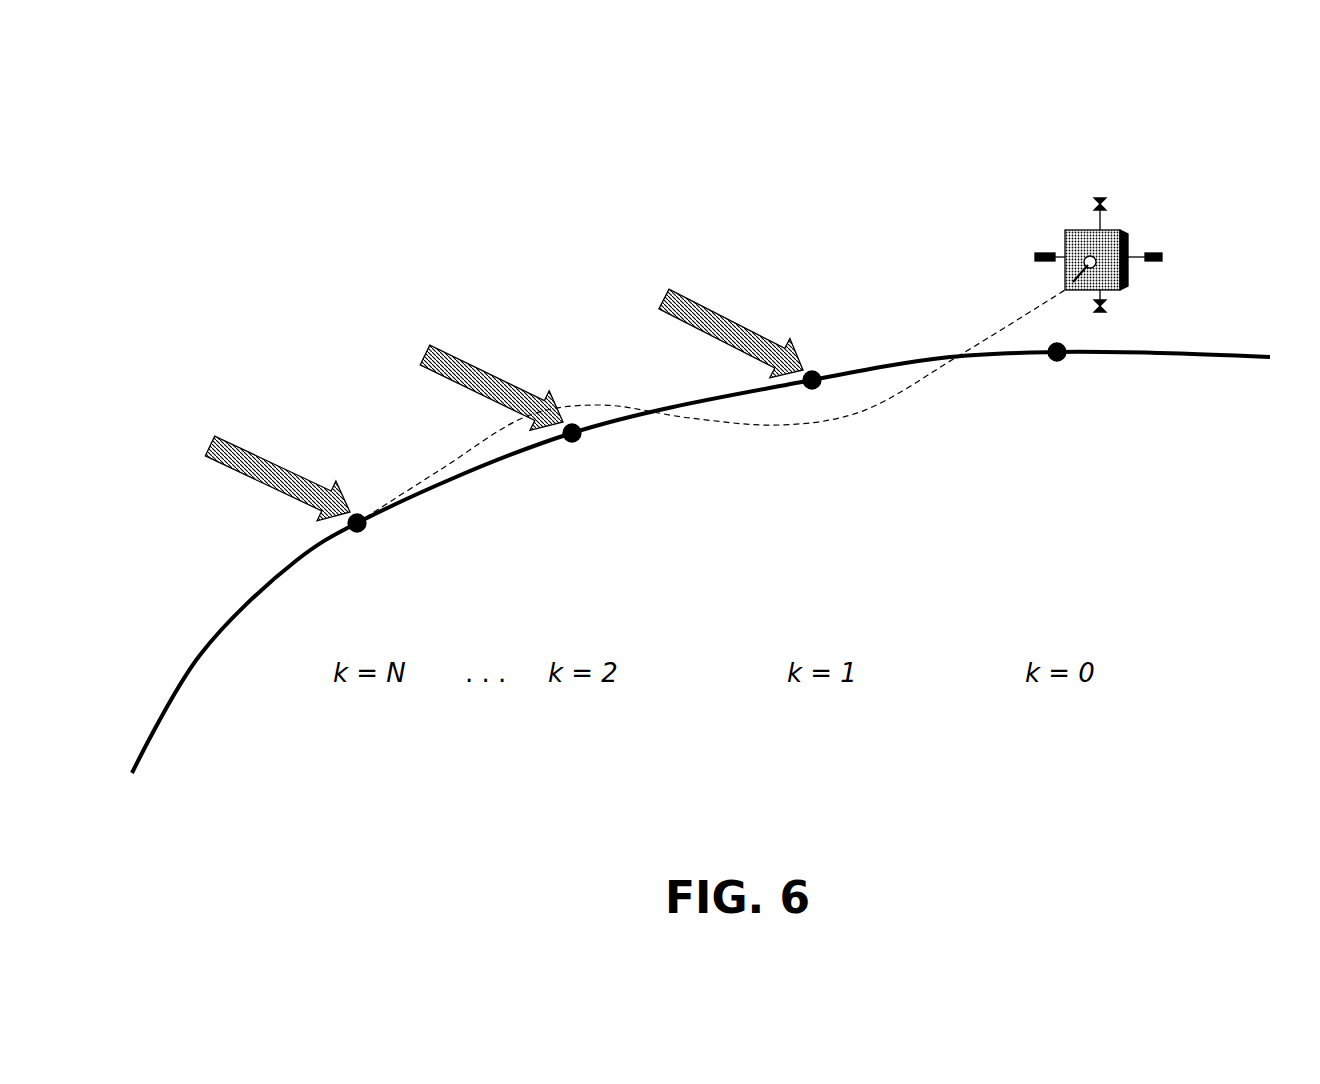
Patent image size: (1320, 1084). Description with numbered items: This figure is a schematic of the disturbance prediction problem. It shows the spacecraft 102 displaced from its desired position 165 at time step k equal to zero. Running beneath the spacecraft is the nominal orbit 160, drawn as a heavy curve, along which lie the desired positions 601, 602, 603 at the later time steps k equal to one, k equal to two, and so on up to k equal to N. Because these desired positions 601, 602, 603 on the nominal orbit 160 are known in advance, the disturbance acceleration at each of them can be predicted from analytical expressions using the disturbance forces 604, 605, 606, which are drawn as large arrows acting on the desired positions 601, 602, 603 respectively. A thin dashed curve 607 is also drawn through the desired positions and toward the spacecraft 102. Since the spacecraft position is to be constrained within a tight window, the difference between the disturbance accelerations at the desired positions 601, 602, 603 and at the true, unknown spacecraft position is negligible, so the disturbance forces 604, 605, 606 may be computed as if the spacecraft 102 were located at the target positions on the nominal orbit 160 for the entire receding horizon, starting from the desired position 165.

The spacecraft 102 is at (1072, 233).
The nominal orbit 160 is at (135, 770).
The desired position 165 is at (1063, 360).
The desired position 601 is at (815, 390).
The desired position 602 is at (575, 442).
The desired position 603 is at (366, 522).
The disturbance force 604 is at (657, 302).
The disturbance force 605 is at (422, 353).
The disturbance force 606 is at (214, 433).
The estimated trajectory 607 is at (925, 370).